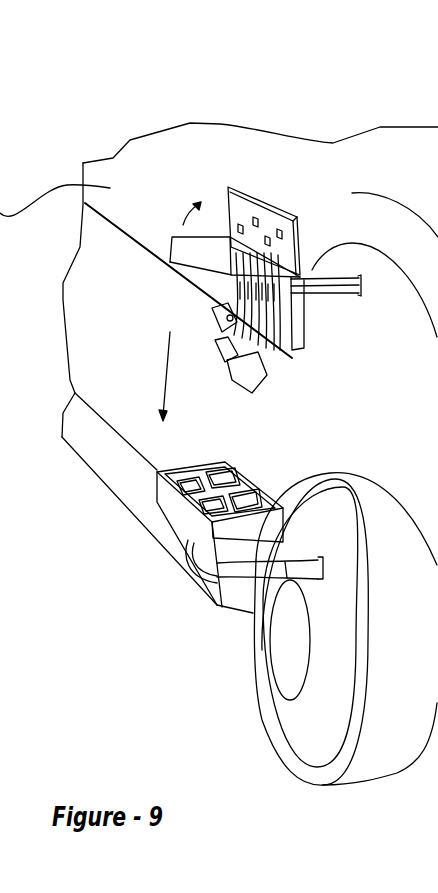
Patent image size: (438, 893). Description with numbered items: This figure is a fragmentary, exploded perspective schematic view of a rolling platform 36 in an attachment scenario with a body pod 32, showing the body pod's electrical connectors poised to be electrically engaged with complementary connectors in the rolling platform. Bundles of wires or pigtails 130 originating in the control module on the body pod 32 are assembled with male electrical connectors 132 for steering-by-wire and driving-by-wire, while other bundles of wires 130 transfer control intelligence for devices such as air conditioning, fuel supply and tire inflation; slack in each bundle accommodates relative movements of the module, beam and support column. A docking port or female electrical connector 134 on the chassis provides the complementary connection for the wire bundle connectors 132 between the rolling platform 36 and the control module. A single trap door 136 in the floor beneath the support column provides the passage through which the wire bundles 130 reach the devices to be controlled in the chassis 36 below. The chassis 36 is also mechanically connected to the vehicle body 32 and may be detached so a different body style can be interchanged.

The body pod 32 is at (237, 140).
The rolling platform 36 is at (117, 483).
The bundles of wires 130 is at (240, 306).
The electrical connectors 132 is at (218, 354).
The docking port 134 is at (218, 481).
The trap door 136 is at (237, 187).